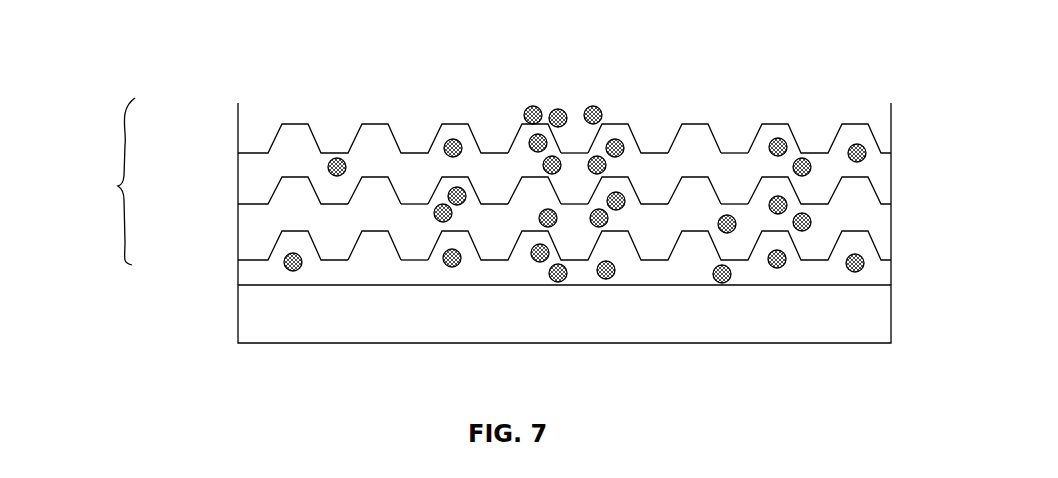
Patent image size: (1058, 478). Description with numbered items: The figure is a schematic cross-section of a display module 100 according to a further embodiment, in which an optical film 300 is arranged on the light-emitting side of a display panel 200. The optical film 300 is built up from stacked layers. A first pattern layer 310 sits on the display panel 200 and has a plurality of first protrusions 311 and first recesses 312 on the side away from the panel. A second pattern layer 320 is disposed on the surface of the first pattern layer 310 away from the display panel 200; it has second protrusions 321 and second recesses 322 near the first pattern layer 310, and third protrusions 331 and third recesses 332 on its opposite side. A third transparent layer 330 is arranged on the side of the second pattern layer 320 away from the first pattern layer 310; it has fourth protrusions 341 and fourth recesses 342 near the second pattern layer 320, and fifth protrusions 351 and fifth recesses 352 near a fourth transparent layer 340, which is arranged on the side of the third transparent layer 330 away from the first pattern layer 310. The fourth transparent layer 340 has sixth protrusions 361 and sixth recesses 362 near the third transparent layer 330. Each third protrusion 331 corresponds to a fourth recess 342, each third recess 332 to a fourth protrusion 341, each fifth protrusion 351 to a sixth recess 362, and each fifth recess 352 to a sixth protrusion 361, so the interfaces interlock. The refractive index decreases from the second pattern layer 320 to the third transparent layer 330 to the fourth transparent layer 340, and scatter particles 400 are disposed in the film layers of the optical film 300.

The display module 100 is at (130, 60).
The display panel 200 is at (237, 313).
The optical film 300 is at (479, 231).
The first pattern layer 310 is at (237, 278).
The first protrusions 311 is at (372, 248).
The first recesses 312 is at (421, 245).
The second pattern layer 320 is at (237, 230).
The second protrusions 321 is at (418, 236).
The second recesses 322 is at (380, 220).
The third transparent layer 330 is at (237, 185).
The third protrusions 331 is at (530, 192).
The third recesses 332 is at (575, 220).
The fourth transparent layer 340 is at (237, 130).
The fourth protrusions 341 is at (572, 190).
The fourth recesses 342 is at (528, 170).
The fifth protrusions 351 is at (696, 142).
The fifth recesses 352 is at (744, 138).
The sixth protrusions 361 is at (744, 168).
The sixth recesses 362 is at (694, 120).
The scatter particles 400 is at (862, 150).